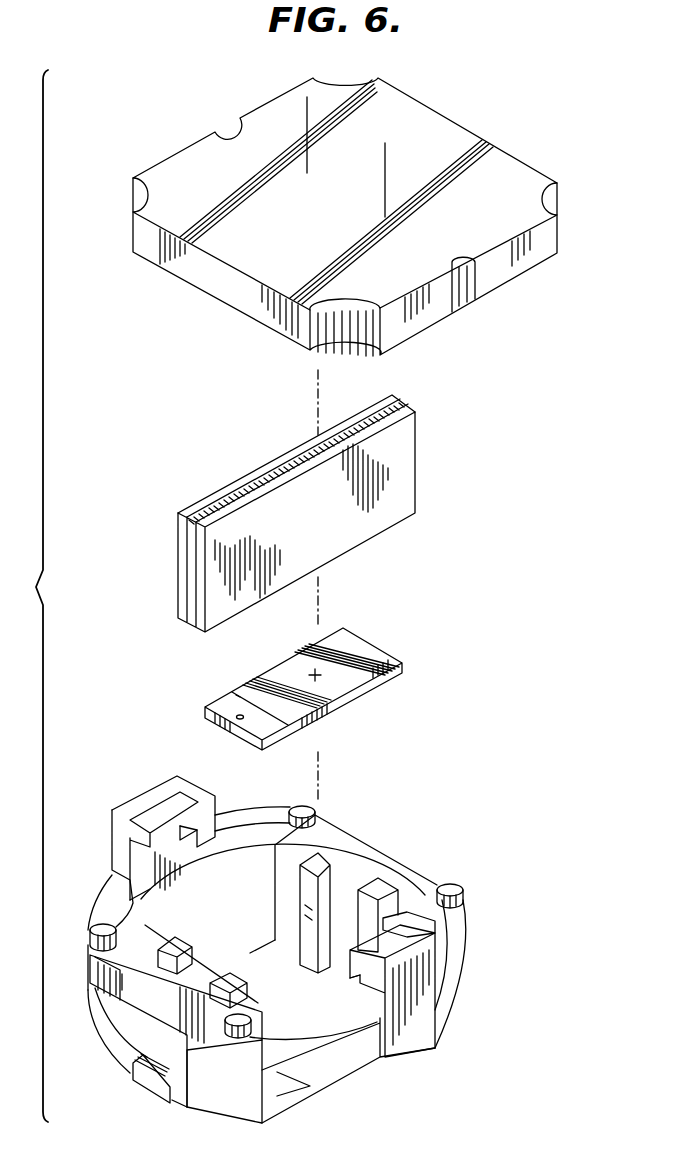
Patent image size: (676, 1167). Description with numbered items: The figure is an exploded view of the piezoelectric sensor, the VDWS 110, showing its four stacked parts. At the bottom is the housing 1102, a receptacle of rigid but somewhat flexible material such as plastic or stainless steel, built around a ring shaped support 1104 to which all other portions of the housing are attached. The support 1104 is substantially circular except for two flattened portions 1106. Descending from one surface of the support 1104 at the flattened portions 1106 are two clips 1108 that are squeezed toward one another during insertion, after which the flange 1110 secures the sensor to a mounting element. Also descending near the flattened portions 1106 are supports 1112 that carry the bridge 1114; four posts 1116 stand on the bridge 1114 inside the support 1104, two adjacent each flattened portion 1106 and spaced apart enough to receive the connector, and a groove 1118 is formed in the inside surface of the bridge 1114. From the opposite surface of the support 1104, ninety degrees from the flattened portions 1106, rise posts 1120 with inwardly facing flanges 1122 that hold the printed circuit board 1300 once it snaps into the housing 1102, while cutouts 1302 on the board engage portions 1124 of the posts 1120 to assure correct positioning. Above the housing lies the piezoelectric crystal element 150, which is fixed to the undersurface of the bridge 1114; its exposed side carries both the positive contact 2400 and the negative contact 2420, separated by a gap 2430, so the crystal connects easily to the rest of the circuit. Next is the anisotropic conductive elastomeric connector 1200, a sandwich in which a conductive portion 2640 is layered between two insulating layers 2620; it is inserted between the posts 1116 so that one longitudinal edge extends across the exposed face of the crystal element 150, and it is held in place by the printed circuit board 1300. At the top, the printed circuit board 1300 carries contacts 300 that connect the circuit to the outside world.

The VDWS 110 is at (511, 520).
The piezoelectric crystal element 150 is at (385, 647).
The contacts 300 is at (318, 142).
The housing 1102 is at (472, 914).
The ring shaped support 1104 is at (101, 908).
The flattened portions 1106 is at (377, 848).
The clips 1108 is at (150, 1052).
The flange 1110 is at (152, 1080).
The supports 1112 is at (103, 1000).
The bridge 1114 is at (277, 988).
The posts 1116 is at (323, 857).
The groove 1118 is at (300, 1086).
The posts 1120 is at (113, 826).
The inwardly facing flanges 1122 is at (170, 838).
The portions of posts 1124 is at (196, 836).
The anisotropic conductive elastomeric connector 1200 is at (328, 506).
The printed circuit board 1300 is at (350, 217).
The cutouts 1302 is at (229, 131).
The positive contact 2400 is at (297, 675).
The negative contact 2420 is at (222, 707).
The gap 2430 is at (236, 695).
The insulating layers 2620 is at (282, 457).
The conductive portion 2640 is at (403, 405).